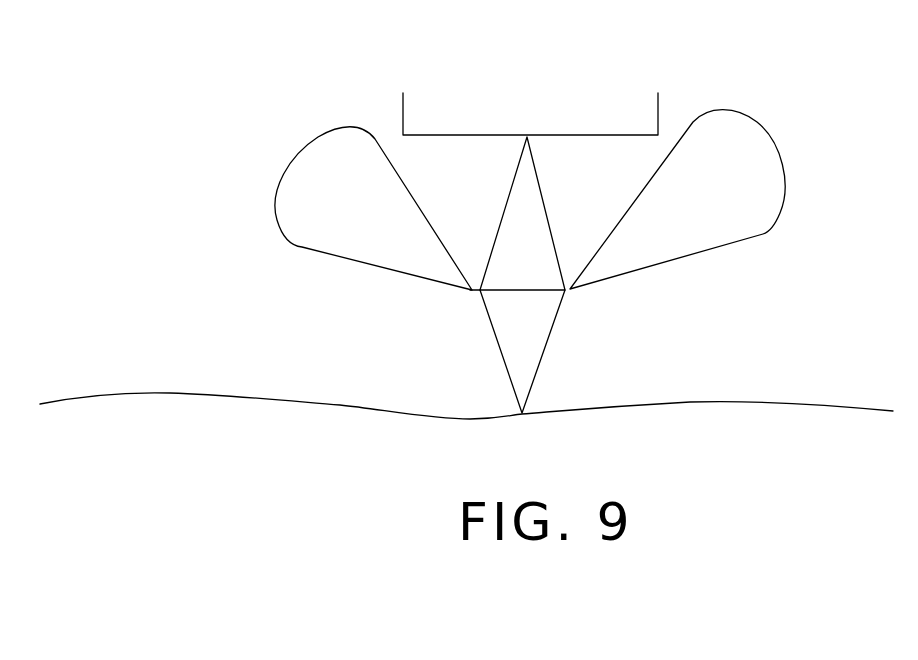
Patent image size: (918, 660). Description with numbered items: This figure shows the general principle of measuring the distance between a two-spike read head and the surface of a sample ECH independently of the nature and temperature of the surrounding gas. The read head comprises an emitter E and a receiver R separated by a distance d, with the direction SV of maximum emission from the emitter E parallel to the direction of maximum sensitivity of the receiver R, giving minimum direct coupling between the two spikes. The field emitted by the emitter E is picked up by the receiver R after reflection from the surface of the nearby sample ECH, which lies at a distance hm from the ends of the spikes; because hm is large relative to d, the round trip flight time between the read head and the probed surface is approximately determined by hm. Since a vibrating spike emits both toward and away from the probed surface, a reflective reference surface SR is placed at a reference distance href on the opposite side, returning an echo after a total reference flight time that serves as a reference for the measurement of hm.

The reflective reference surface SR is at (530, 115).
The direction of maximum emission SV is at (476, 316).
The emitter E is at (331, 249).
The receiver R is at (681, 244).
The sample ECH is at (466, 423).
The reference distance href is at (525, 158).
The distance between spike ends and probed surface hm is at (525, 290).
The distance between emitter and receiver d is at (512, 322).